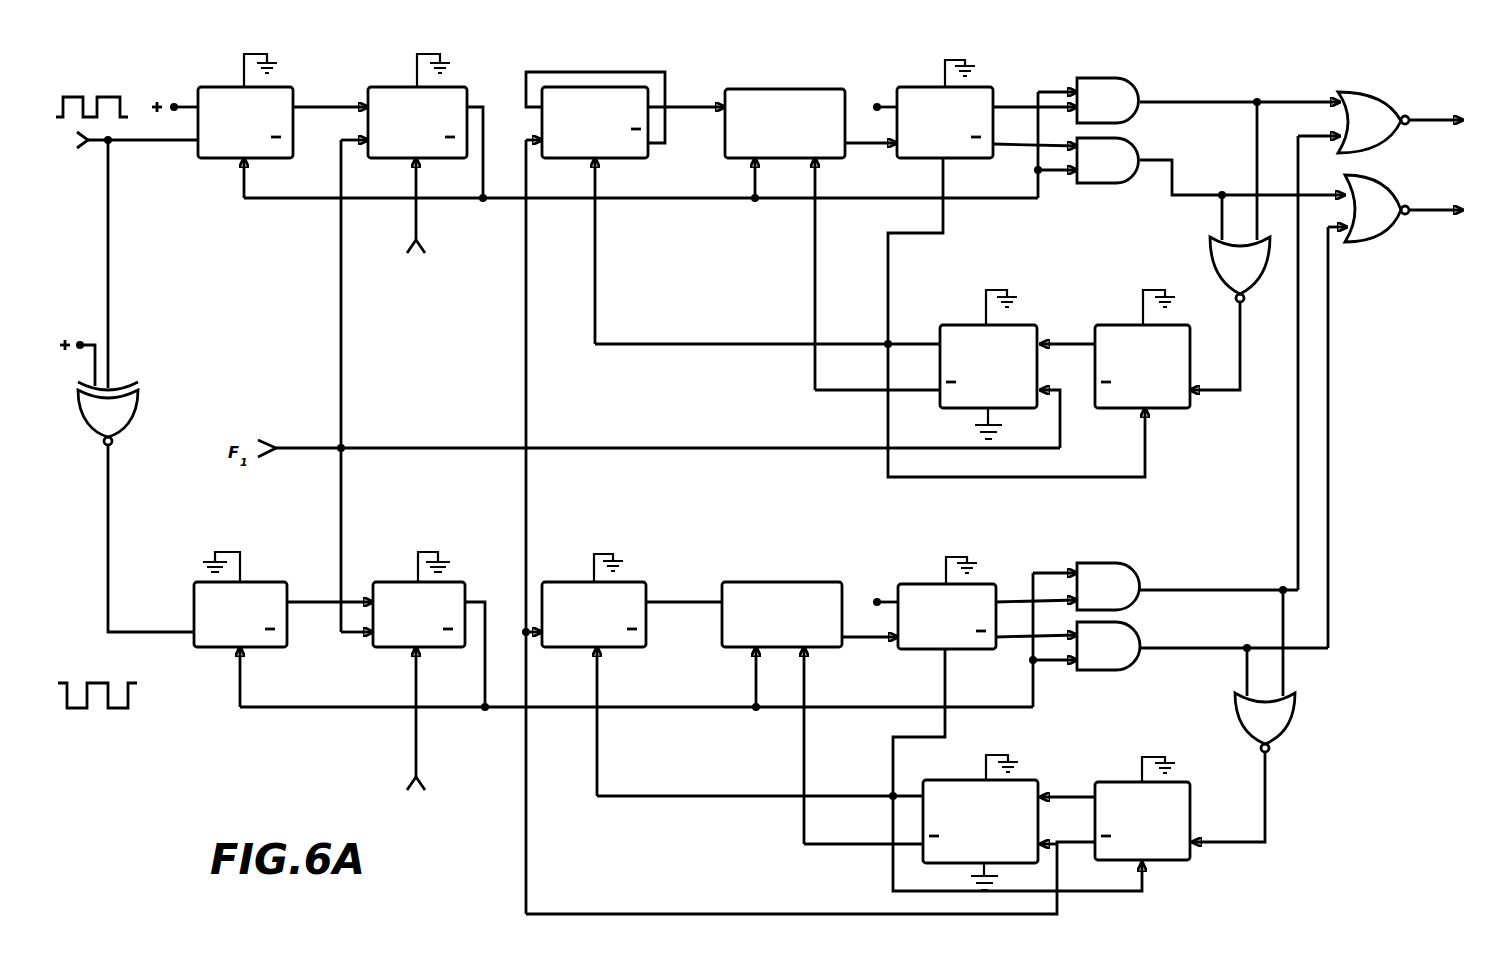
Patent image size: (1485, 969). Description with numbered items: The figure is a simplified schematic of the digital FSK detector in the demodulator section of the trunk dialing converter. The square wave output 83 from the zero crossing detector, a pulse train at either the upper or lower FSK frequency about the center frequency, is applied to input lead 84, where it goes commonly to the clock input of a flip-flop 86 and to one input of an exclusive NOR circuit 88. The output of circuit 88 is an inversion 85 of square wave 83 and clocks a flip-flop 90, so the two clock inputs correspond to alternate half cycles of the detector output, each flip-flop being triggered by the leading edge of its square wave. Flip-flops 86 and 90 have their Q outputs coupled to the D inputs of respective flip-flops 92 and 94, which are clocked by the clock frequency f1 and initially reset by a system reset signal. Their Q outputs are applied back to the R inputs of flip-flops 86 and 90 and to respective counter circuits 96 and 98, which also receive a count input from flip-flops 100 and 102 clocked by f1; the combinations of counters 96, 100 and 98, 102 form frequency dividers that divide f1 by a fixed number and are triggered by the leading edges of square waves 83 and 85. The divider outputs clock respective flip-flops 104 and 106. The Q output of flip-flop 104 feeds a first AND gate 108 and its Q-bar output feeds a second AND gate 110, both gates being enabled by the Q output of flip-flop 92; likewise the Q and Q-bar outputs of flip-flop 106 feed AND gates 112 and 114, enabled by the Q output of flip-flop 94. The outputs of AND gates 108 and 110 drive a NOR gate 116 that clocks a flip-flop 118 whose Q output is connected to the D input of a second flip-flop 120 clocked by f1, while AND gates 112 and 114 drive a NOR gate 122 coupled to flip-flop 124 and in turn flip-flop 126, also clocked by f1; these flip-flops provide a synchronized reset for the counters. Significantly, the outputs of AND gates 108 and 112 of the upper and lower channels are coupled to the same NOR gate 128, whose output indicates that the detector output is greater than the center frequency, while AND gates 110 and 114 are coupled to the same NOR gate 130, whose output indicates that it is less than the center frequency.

The square wave output 83 is at (108, 98).
The input lead 84 is at (93, 147).
The inversion of the square wave 85 is at (128, 695).
The flip-flop 86 is at (290, 84).
The exclusive NOR circuit 88 is at (137, 415).
The flip-flop 90 is at (265, 580).
The flip-flop 92 is at (468, 68).
The flip-flop 94 is at (455, 580).
The counter circuit 96 is at (795, 89).
The counter circuit 98 is at (770, 582).
The flip-flop 100 is at (652, 85).
The flip-flop 102 is at (638, 582).
The flip-flop 104 is at (992, 83).
The flip-flop 106 is at (912, 584).
The first AND gate 108 is at (1126, 62).
The second AND gate 110 is at (1100, 183).
The AND gate 112 is at (1115, 563).
The AND gate 114 is at (1105, 670).
The NOR gate 116 is at (1212, 250).
The flip-flop 118 is at (1105, 323).
The second flip-flop 120 is at (1020, 323).
The NOR gate 122 is at (1290, 725).
The flip-flop 124 is at (1185, 860).
The flip-flop 126 is at (1032, 778).
The NOR gate 128 is at (1350, 84).
The NOR gate 130 is at (1377, 241).